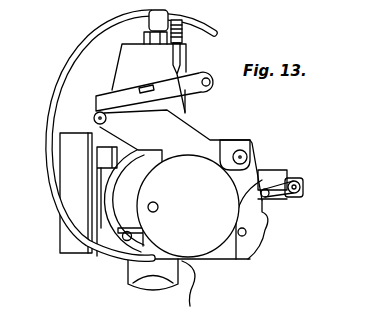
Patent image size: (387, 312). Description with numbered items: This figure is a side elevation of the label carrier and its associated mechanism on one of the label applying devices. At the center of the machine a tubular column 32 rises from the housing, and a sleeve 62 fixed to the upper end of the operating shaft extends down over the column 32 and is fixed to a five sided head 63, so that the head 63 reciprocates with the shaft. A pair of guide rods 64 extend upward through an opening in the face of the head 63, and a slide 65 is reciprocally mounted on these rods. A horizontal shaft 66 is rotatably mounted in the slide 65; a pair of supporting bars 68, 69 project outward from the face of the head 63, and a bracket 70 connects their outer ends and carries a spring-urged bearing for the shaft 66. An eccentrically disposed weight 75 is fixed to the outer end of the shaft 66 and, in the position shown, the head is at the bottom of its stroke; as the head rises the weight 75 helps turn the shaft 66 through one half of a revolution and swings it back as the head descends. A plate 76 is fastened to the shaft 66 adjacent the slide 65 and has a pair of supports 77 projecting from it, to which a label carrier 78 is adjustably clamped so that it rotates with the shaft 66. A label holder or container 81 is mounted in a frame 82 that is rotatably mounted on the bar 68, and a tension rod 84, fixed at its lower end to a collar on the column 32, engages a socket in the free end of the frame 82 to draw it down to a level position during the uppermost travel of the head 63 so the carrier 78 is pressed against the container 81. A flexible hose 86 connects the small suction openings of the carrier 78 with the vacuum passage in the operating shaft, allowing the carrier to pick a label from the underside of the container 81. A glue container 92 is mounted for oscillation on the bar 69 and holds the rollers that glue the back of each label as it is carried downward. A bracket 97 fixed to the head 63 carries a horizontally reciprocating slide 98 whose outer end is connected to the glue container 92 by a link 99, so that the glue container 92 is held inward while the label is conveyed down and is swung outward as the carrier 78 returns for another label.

The tubular column 32 is at (126, 270).
The sleeve 62 is at (149, 61).
The five sided head 63 is at (60, 244).
The guide rods 64 is at (105, 155).
The slide 65 is at (100, 180).
The shaft 66 is at (156, 212).
The supporting bar 68 is at (99, 111).
The supporting bar 69 is at (247, 155).
The bracket 70 is at (181, 174).
The eccentrically disposed weight 75 is at (188, 206).
The plate 76 is at (124, 201).
The supports 77 is at (122, 253).
The label carrier 78 is at (199, 283).
The label holder or container 81 is at (192, 105).
The frame 82 is at (211, 68).
The tension rod 84 is at (219, 42).
The flexible hose 86 is at (52, 98).
The glue container 92 is at (264, 228).
The bracket 97 is at (276, 170).
The slide 98 is at (300, 181).
The link 99 is at (286, 201).